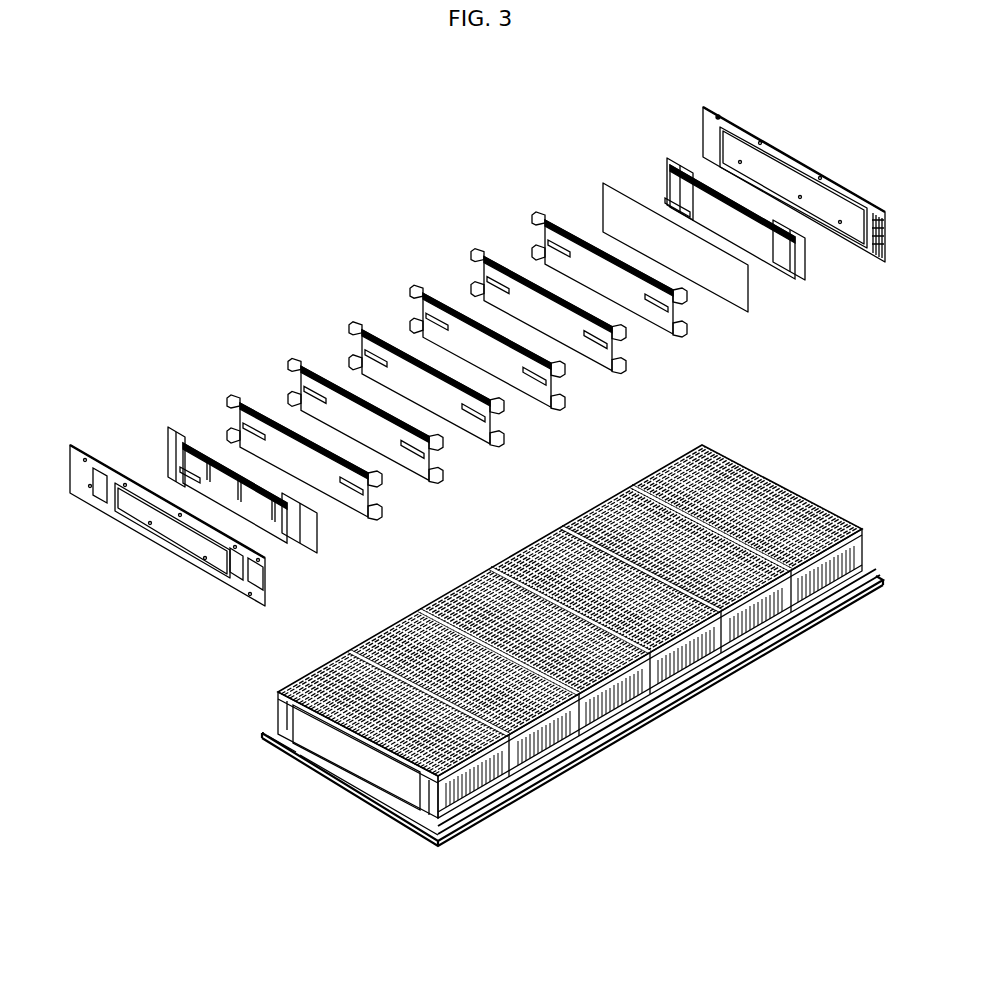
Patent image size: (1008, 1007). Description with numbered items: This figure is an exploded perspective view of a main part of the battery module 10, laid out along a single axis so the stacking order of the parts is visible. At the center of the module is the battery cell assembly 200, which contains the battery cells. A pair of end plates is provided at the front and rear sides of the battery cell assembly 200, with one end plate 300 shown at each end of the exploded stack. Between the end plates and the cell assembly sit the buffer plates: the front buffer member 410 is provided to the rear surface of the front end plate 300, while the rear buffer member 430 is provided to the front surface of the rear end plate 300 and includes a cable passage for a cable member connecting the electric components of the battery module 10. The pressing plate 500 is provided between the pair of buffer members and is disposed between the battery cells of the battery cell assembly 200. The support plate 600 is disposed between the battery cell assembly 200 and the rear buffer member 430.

The battery module 10 is at (285, 262).
The battery cell assembly 200 is at (441, 594).
The end plate 300 is at (74, 447).
The front buffer member 410 is at (168, 424).
The rear buffer member 430 is at (668, 157).
The pressing plate 500 is at (355, 319).
The support plate 600 is at (600, 180).